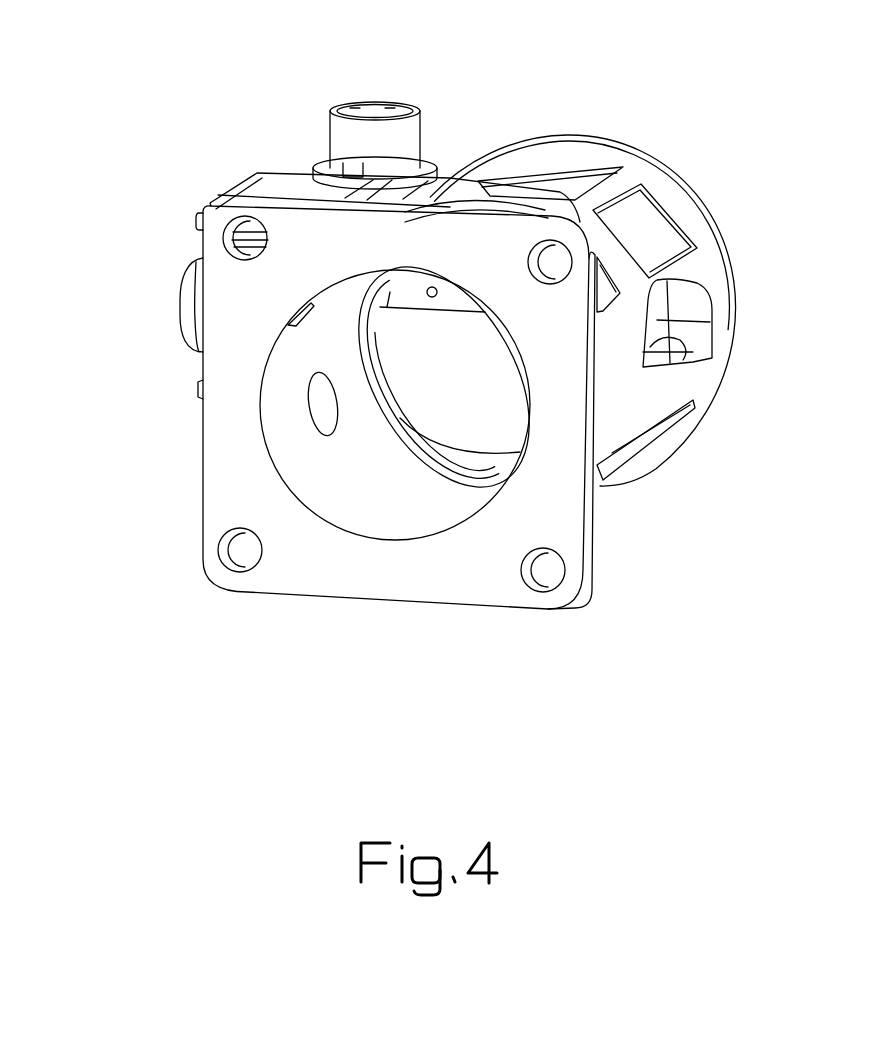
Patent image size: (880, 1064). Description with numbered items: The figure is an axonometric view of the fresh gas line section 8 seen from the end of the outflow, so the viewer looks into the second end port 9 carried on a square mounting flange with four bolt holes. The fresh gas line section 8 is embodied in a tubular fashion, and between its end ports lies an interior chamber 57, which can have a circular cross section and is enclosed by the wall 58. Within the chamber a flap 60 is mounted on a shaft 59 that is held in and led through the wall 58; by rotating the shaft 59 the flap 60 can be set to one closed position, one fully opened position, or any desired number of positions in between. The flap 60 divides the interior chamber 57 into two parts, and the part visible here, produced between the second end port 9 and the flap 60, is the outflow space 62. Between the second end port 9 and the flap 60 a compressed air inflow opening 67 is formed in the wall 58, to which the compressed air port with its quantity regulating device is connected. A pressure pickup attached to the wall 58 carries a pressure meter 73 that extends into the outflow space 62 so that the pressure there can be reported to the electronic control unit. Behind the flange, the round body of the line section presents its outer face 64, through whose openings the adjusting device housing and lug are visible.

The fresh gas line section 8 is at (186, 118).
The second end port 9 is at (288, 578).
The interior chamber 57 is at (433, 500).
The wall 58 is at (612, 425).
The shaft 59 is at (410, 297).
The flap 60 is at (488, 435).
The outflow space 62 is at (370, 507).
The outer face 64 is at (592, 148).
The compressed air inflow opening 67 is at (325, 413).
The pressure meter 73 is at (290, 322).